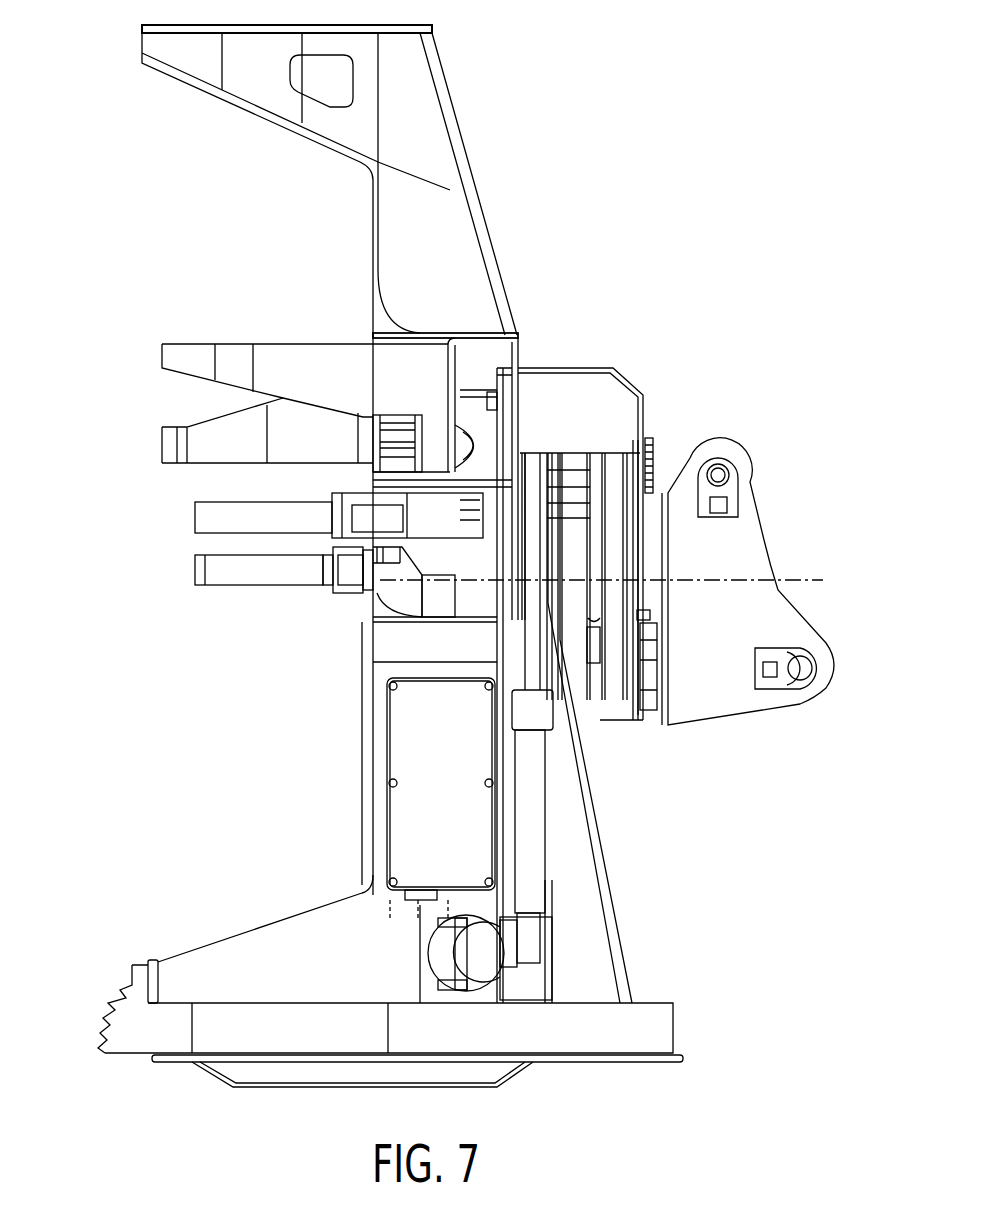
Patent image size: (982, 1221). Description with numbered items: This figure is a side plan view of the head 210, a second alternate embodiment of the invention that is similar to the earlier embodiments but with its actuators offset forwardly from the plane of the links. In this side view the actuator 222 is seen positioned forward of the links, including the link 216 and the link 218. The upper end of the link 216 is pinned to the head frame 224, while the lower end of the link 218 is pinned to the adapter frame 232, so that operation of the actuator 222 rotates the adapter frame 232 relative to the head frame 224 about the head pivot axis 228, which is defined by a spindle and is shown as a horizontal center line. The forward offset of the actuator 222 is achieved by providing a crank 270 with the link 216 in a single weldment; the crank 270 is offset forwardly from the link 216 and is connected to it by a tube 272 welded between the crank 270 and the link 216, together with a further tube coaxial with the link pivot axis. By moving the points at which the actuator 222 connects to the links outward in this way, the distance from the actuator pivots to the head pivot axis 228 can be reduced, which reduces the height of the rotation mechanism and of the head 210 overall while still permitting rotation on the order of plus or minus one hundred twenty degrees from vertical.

The head 210 is at (530, 132).
The head frame 224 is at (480, 229).
The crank 270 is at (535, 450).
The tube 272 is at (578, 450).
The link 216 is at (633, 557).
The link 218 is at (620, 723).
The adapter frame 232 is at (762, 520).
The head pivot axis 228 is at (808, 578).
The actuator 222 is at (547, 820).